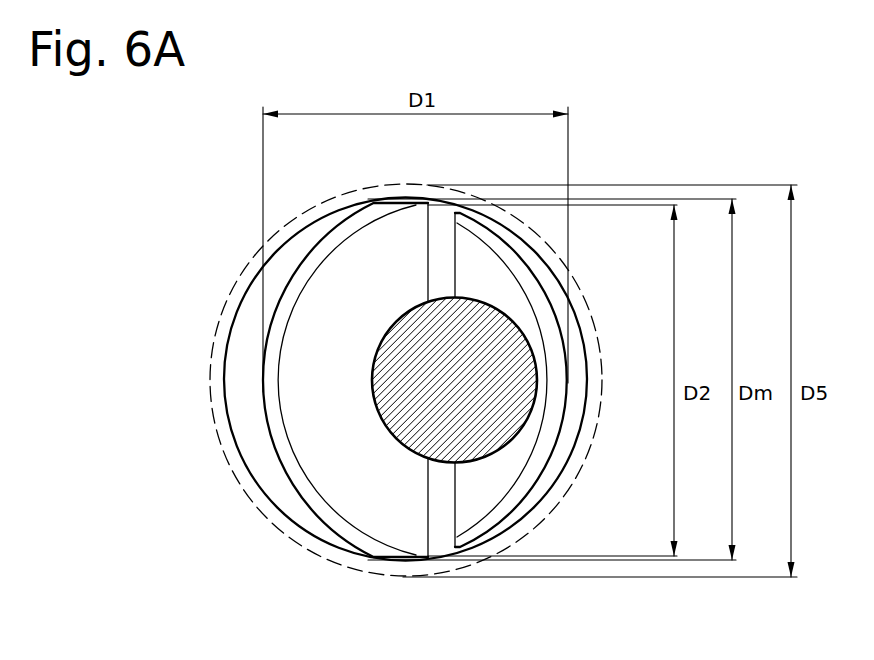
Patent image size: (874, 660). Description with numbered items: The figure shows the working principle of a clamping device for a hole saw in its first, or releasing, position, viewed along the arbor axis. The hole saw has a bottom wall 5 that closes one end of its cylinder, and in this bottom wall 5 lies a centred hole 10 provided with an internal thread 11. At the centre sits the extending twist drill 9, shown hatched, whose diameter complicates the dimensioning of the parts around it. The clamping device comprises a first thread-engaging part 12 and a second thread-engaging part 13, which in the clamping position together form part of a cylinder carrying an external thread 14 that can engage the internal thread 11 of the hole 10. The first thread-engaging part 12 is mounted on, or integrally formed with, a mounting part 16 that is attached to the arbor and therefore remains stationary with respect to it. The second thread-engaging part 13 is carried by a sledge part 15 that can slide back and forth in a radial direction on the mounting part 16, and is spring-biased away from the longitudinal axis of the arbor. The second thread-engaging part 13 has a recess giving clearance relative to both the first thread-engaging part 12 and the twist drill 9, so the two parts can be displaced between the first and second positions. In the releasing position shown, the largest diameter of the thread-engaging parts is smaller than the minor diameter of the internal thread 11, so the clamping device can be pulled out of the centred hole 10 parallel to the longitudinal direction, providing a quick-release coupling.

The bottom wall 5 is at (190, 325).
The twist drill 9 is at (500, 422).
The centred hole 10 is at (241, 427).
The internal thread 11 is at (285, 495).
The first thread-engaging part 12 is at (353, 490).
The second thread-engaging part 13 is at (483, 278).
The external thread 14 is at (268, 380).
The sledge part 15 is at (443, 523).
The mounting part 16 is at (443, 523).